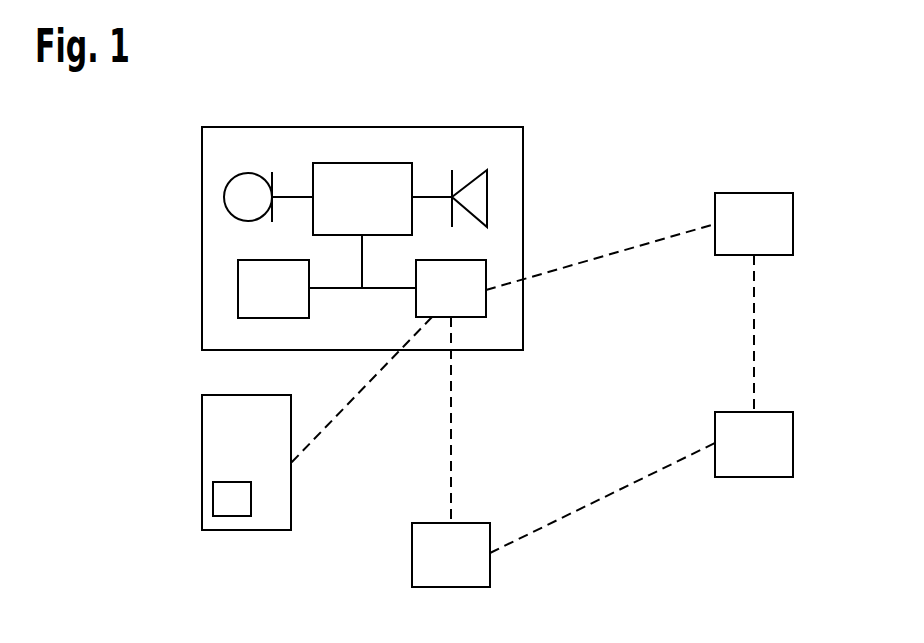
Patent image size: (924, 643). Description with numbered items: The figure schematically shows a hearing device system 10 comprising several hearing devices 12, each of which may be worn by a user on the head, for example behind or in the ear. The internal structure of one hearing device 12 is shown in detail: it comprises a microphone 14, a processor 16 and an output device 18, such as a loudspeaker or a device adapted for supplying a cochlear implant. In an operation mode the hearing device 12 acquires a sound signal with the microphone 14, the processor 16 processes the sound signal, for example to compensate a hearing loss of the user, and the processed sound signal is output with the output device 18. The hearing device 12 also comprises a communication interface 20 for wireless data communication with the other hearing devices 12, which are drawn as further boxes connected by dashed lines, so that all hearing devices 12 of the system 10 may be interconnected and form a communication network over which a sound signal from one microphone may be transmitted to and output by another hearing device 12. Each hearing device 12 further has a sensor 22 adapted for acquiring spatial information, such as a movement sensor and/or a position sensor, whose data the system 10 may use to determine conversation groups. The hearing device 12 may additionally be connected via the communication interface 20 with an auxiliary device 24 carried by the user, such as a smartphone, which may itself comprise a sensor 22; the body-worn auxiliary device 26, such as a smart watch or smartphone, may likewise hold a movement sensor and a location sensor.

The hearing device system 10 is at (741, 102).
The hearing device 12 is at (291, 127).
The microphone 14 is at (224, 197).
The processor 16 is at (365, 163).
The output device 18 is at (487, 198).
The communication interface 20 is at (487, 300).
The sensor 22 is at (238, 288).
The auxiliary device 24 is at (202, 437).
The auxiliary device 26 is at (213, 497).